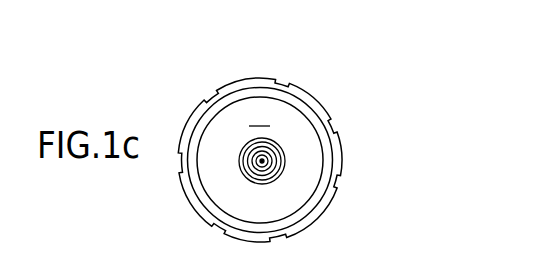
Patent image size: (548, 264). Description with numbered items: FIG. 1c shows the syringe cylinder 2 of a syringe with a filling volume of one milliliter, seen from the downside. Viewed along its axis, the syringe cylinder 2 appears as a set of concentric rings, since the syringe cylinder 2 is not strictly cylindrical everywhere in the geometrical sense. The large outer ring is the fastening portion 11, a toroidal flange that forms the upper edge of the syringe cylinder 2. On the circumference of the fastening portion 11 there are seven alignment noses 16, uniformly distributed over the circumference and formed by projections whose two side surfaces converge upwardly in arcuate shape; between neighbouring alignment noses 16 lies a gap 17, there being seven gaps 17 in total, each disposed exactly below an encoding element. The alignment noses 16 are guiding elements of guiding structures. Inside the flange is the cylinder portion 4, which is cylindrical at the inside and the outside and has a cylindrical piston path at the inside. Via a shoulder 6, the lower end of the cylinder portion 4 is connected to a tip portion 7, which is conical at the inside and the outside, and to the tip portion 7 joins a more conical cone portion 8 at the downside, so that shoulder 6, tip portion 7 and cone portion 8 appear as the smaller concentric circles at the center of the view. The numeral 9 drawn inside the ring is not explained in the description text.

The syringe cylinder 2 is at (183, 109).
The cylinder portion 4 is at (279, 146).
The shoulder 6 is at (282, 157).
The tip portion 7 is at (276, 177).
The cone portion 8 is at (258, 166).
The interior space 9 is at (259, 113).
The fastening portion 11 is at (349, 163).
The alignment nose 16 is at (241, 86).
The gap 17 is at (281, 79).